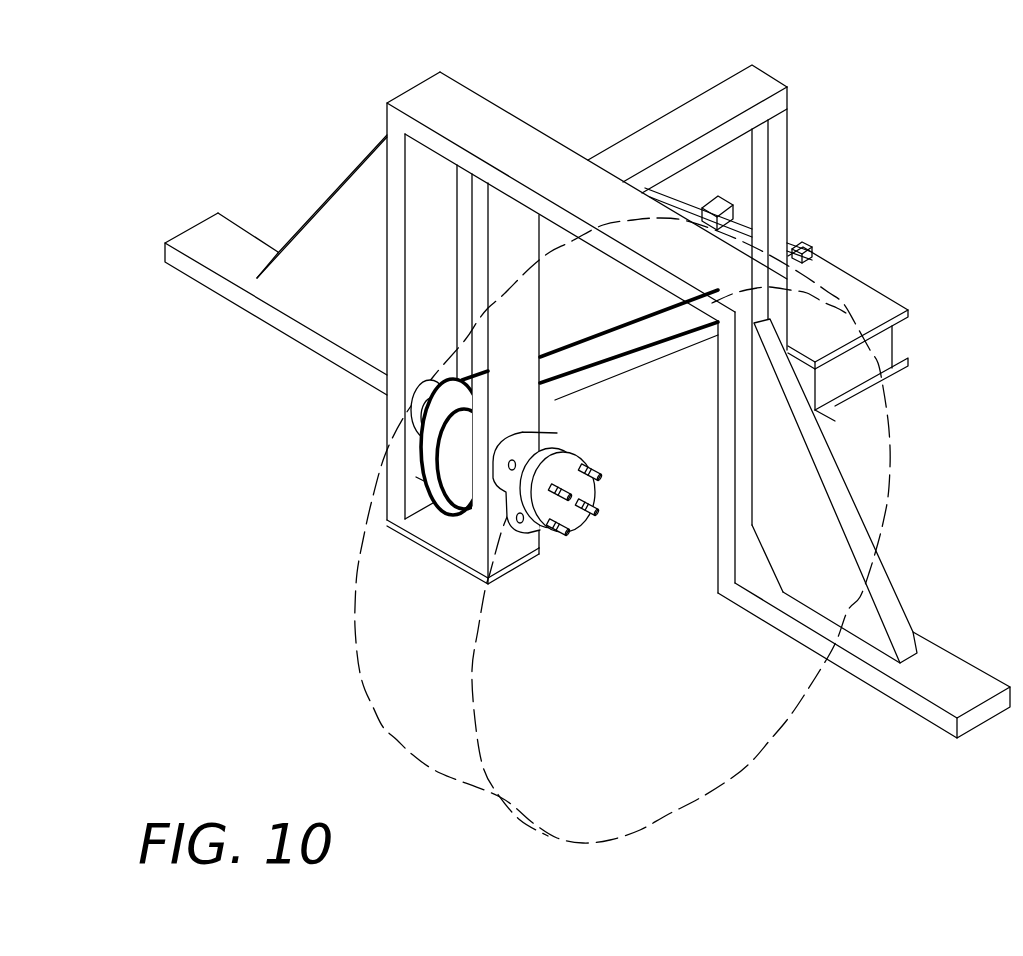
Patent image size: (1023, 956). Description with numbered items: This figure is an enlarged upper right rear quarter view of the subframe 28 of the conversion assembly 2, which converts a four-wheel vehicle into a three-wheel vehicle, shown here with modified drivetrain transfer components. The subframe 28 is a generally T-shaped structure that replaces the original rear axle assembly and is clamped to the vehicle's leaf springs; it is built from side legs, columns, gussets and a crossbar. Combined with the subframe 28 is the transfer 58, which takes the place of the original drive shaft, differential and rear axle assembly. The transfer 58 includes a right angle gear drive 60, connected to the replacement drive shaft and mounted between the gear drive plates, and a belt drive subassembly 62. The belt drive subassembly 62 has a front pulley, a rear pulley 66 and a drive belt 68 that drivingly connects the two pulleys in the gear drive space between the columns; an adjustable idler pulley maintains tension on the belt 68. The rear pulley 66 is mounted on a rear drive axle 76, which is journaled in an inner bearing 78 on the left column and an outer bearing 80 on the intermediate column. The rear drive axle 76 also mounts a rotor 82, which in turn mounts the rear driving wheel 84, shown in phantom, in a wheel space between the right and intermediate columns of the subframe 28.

The conversion assembly 2 is at (292, 115).
The subframe 28 is at (605, 100).
The transfer 58 is at (322, 537).
The gear drive 60 is at (895, 343).
The belt drive subassembly 62 is at (452, 380).
The rear pulley 66 is at (416, 479).
The drive belt 68 is at (618, 330).
The rear drive axle 76 is at (416, 430).
The inner bearing 78 is at (410, 396).
The outer bearing 80 is at (530, 432).
The rotor 82 is at (598, 492).
The rear driving wheel 84 is at (352, 628).